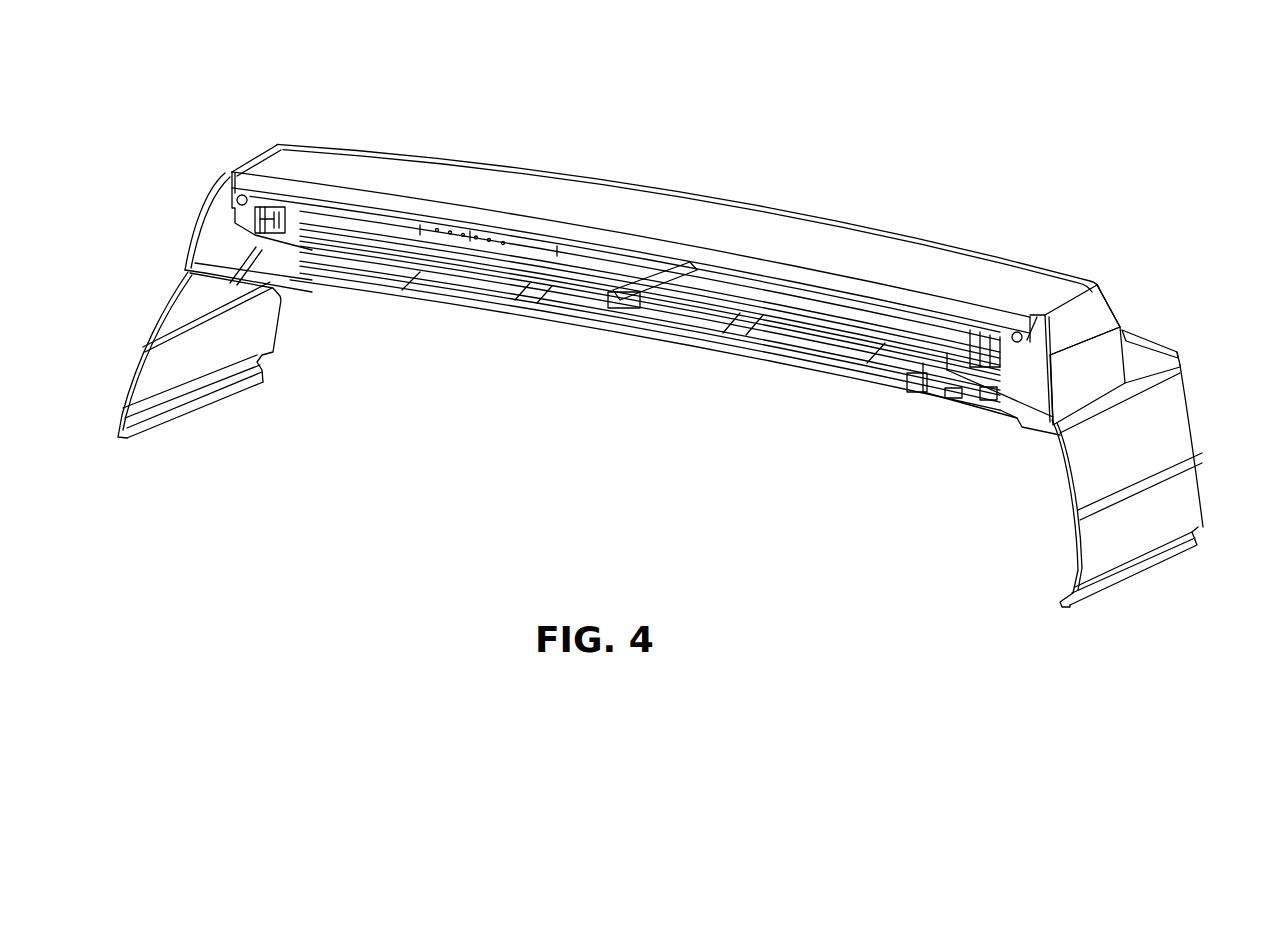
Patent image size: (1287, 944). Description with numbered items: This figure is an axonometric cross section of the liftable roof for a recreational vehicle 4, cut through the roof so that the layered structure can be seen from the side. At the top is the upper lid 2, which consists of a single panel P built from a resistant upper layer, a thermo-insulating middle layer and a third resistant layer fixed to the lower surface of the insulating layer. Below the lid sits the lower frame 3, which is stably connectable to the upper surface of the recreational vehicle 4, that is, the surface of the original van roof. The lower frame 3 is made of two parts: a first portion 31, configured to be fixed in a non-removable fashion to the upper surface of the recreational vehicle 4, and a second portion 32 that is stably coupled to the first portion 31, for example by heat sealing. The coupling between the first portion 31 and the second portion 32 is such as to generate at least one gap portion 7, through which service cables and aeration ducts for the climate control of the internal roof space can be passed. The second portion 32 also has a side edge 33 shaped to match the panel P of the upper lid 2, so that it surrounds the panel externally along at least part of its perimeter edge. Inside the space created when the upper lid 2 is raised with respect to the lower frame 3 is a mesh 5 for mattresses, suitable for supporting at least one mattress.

The upper lid 2 is at (437, 123).
The panel P is at (667, 220).
The mesh 5 is at (488, 270).
The first portion 31 is at (923, 400).
The gap portion 7 is at (1003, 400).
The side edge 33 is at (1090, 318).
The second portion 32 is at (1108, 378).
The lower frame 3 is at (1143, 345).
The recreational vehicle 4 is at (1130, 462).